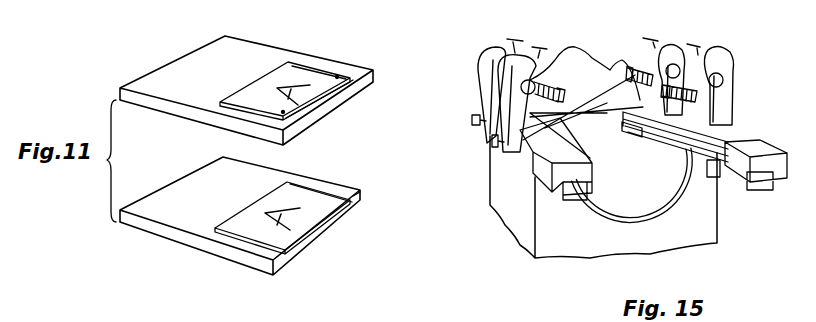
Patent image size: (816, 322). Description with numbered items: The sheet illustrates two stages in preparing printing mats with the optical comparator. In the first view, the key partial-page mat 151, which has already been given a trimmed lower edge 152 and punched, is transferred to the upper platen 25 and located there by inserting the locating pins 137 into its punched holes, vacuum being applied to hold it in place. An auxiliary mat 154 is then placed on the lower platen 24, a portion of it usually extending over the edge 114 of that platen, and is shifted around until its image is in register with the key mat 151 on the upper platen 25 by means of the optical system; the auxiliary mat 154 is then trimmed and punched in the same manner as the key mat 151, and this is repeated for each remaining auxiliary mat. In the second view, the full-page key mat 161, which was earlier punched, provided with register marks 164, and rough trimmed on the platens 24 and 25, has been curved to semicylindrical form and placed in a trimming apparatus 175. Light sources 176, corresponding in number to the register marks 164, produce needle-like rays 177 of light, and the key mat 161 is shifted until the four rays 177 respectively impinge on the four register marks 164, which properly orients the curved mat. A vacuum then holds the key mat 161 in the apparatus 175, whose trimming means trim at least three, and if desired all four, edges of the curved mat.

In FIG. 11, the upper platen 25 is at (177, 68).
In FIG. 11, the lower platen 24 is at (170, 190).
In FIG. 11, the key partial-page mat 151 is at (290, 62).
In FIG. 11, the locating pins 137 is at (337, 77).
In FIG. 11, the trimmed lower edge 152 is at (318, 102).
In FIG. 11, the auxiliary mat 154 is at (293, 235).
In FIG. 11, the edge of the platen 114 is at (360, 198).
In FIG. 15, the light sources 176 is at (502, 90).
In FIG. 15, the needle-like rays 177 is at (580, 108).
In FIG. 15, the register marks 164 is at (675, 160).
In FIG. 15, the key mat 161 is at (606, 212).
In FIG. 15, the trimming apparatus 175 is at (523, 250).